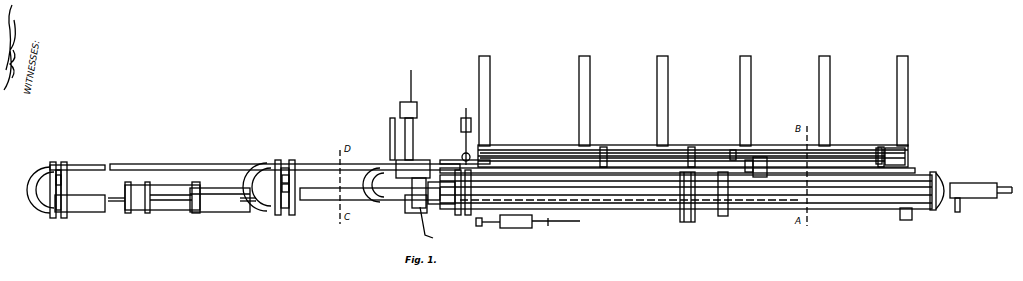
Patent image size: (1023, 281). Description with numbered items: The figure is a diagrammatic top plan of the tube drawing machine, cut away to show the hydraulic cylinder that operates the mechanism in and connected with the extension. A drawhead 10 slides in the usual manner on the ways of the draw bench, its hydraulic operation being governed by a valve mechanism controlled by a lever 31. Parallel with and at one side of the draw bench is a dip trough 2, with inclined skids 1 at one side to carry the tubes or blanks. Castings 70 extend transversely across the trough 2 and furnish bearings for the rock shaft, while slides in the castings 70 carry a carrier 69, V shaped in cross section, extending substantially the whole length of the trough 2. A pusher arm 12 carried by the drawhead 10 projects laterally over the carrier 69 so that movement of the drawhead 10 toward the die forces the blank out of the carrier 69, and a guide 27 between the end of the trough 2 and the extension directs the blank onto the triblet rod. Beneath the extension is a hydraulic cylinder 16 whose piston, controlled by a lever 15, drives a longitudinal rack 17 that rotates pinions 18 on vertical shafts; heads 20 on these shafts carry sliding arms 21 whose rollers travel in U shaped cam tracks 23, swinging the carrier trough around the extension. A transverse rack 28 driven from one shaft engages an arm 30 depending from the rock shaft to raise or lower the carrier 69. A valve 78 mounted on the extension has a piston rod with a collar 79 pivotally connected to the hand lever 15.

The inclined skids 1 is at (490, 80).
The dip trough 2 is at (542, 146).
The drawhead 10 is at (770, 207).
The pusher arm 12 is at (762, 157).
The lever 15 is at (434, 224).
The hydraulic cylinder 16 is at (170, 210).
The rack 17 is at (258, 182).
The pinions 18 is at (296, 188).
The heads 20 is at (878, 112).
The sliding arms 21 is at (64, 188).
The U shaped cam tracks 23 is at (38, 200).
The guide 27 is at (448, 158).
The rack 28 is at (413, 80).
The arm 30 is at (420, 160).
The lever 31 is at (486, 226).
The carrier 69 is at (605, 170).
The castings 70 is at (510, 150).
The valve 78 is at (405, 205).
The collar 79 is at (441, 192).